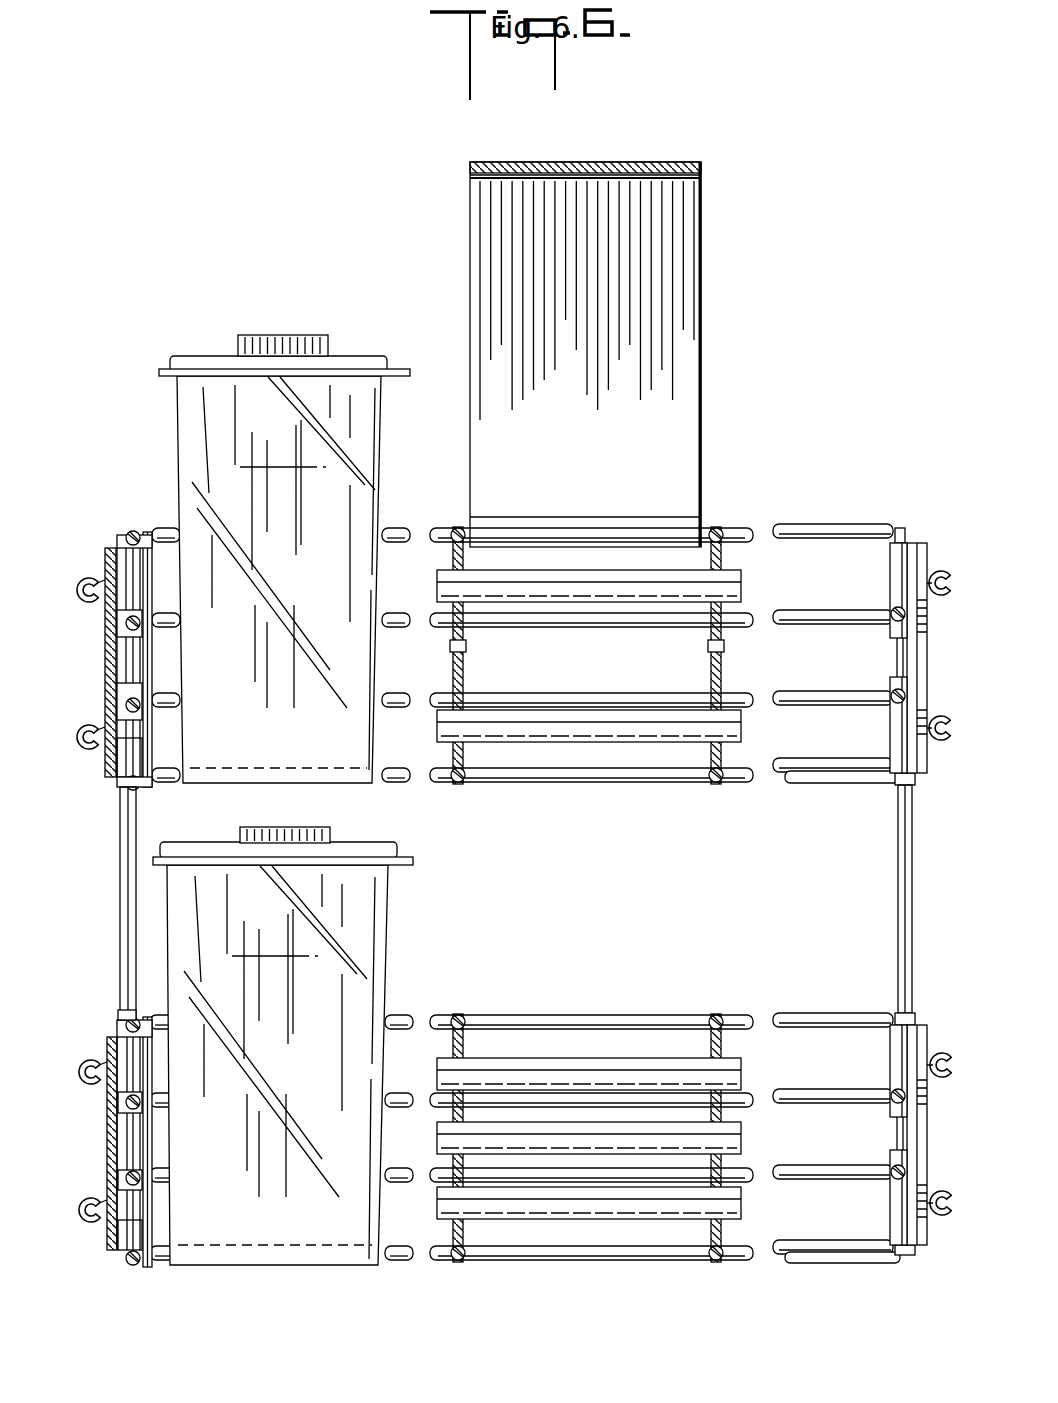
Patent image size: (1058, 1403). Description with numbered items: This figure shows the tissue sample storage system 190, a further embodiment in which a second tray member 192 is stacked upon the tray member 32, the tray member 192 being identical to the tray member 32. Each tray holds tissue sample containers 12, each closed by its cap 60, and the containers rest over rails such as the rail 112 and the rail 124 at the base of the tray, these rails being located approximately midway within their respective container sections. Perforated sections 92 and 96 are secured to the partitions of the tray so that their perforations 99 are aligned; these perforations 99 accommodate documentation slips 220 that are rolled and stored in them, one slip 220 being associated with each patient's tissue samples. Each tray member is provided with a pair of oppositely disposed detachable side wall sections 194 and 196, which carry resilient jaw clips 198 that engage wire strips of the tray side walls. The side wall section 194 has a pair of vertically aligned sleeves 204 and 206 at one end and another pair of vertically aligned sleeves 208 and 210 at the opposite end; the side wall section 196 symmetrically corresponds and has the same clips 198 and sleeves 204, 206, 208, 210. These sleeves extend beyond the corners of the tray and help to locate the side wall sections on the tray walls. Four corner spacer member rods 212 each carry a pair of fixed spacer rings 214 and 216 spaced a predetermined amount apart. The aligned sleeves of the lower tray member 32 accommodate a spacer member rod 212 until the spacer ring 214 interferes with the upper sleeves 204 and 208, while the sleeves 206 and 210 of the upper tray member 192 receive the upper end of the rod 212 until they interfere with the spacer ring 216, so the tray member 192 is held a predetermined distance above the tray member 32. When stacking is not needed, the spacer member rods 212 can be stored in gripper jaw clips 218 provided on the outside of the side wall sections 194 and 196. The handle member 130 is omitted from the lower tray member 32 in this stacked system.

The tissue sample container 12 is at (174, 418).
The tray member 32 is at (645, 1008).
The container cap 60 is at (300, 336).
The perforated section 92 is at (463, 688).
The perforated section 96 is at (708, 680).
The perforations 99 is at (450, 658).
The rail 112 is at (410, 784).
The rail 124 is at (805, 782).
The handle member 130 is at (702, 162).
The tissue sample storage system 190 is at (848, 448).
The tray member 192 is at (815, 526).
The side wall section 194 is at (930, 680).
The side wall section 196 is at (105, 672).
The jaw clips 198 is at (108, 638).
The sleeve 204 is at (890, 578).
The sleeve 206 is at (890, 730).
The sleeve 208 is at (125, 545).
The sleeve 210 is at (122, 757).
The spacer member rod 212 is at (122, 895).
The spacer ring 214 is at (125, 1018).
The spacer ring 216 is at (120, 790).
The gripper jaw clips 218 is at (88, 578).
The documentation slips 220 is at (528, 604).